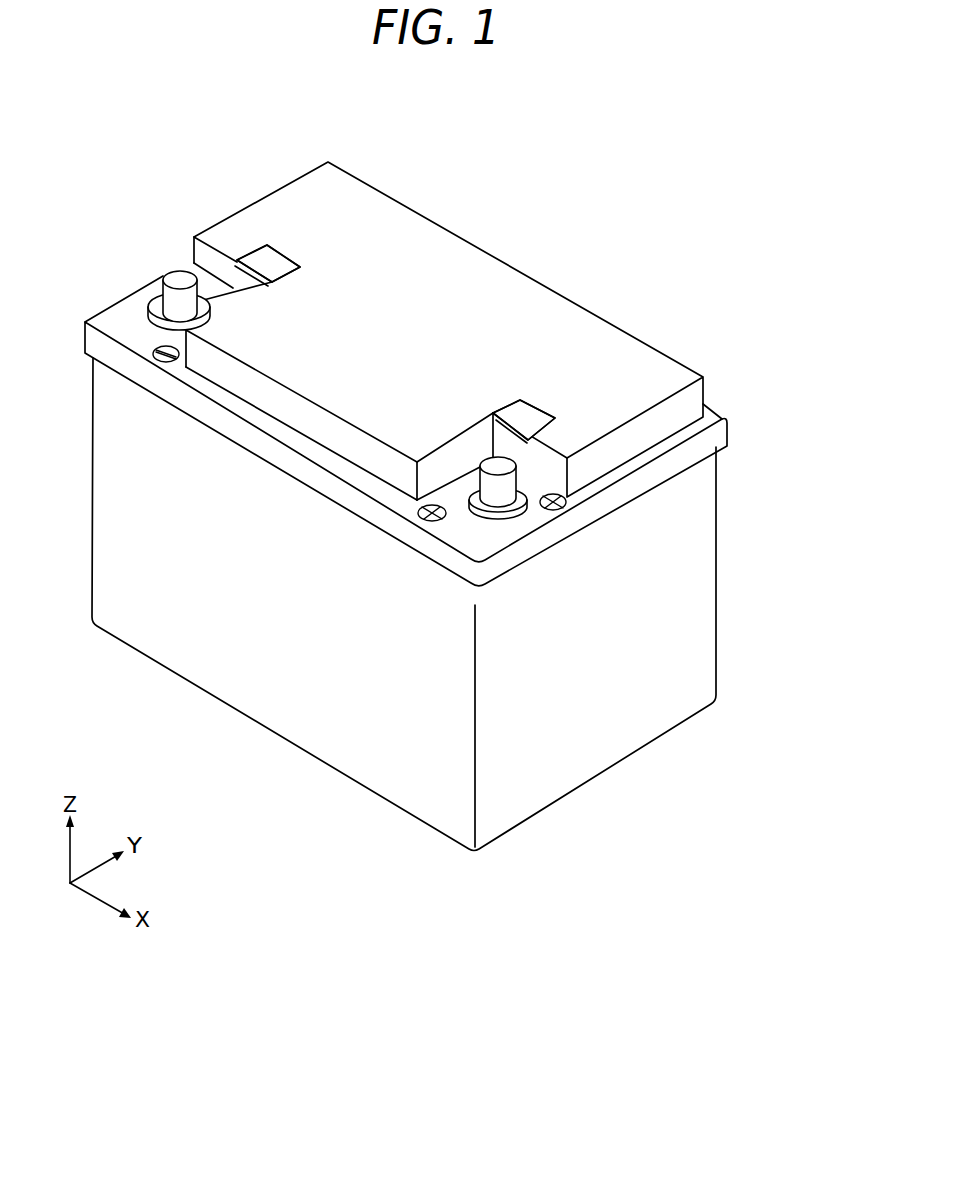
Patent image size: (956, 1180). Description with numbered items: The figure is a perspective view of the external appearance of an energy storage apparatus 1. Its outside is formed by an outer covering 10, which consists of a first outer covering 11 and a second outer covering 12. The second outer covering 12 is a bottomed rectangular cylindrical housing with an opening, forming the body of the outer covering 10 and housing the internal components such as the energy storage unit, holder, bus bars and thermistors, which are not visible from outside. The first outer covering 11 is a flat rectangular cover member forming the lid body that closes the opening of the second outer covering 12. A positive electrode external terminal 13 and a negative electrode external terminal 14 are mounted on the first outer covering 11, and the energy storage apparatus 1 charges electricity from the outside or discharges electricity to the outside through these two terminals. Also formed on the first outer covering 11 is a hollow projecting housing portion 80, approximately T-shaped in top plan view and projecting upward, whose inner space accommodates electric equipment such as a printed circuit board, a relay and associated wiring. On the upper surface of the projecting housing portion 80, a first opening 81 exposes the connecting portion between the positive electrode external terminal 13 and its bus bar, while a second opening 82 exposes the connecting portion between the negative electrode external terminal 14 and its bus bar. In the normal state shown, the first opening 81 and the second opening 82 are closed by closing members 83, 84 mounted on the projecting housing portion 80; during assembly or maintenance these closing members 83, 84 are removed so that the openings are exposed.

The energy storage apparatus 1 is at (716, 202).
The outer covering 10 is at (797, 287).
The first outer covering 11 is at (657, 373).
The second outer covering 12 is at (706, 502).
The positive electrode external terminal 13 is at (501, 462).
The negative electrode external terminal 14 is at (179, 274).
The projecting housing portion 80 is at (460, 260).
The first opening 81 is at (530, 408).
The second opening 82 is at (278, 253).
The closing member 83 is at (524, 420).
The closing member 84 is at (268, 263).